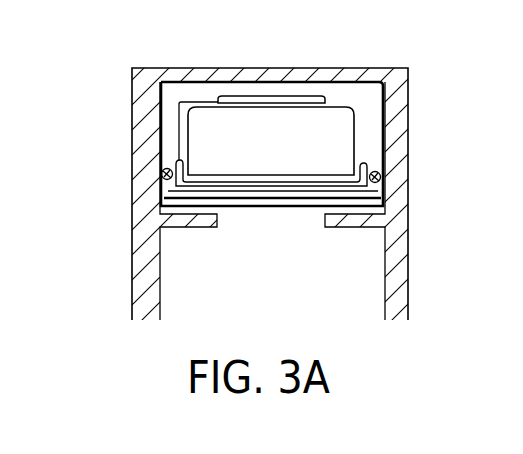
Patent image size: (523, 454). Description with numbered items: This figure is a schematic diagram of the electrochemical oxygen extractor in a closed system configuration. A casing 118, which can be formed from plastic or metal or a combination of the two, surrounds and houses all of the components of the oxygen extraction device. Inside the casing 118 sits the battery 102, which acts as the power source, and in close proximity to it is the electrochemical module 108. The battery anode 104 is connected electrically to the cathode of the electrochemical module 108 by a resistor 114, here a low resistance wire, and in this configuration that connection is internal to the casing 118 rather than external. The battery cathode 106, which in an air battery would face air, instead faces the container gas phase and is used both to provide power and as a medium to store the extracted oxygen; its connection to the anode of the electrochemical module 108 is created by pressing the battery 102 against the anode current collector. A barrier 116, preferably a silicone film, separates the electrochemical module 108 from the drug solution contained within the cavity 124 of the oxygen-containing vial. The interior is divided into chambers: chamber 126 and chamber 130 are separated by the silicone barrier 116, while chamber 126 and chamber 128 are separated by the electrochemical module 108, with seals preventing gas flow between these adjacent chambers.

The battery 102 is at (342, 131).
The battery anode 104 is at (293, 97).
The battery cathode 106 is at (263, 178).
The electrochemical module 108 is at (372, 189).
The resistor 114 is at (207, 101).
The barrier 116 is at (307, 207).
The casing 118 is at (400, 70).
The cavity 124 is at (372, 268).
The chamber 126 is at (165, 91).
The chamber 128 is at (165, 188).
The chamber 130 is at (173, 253).